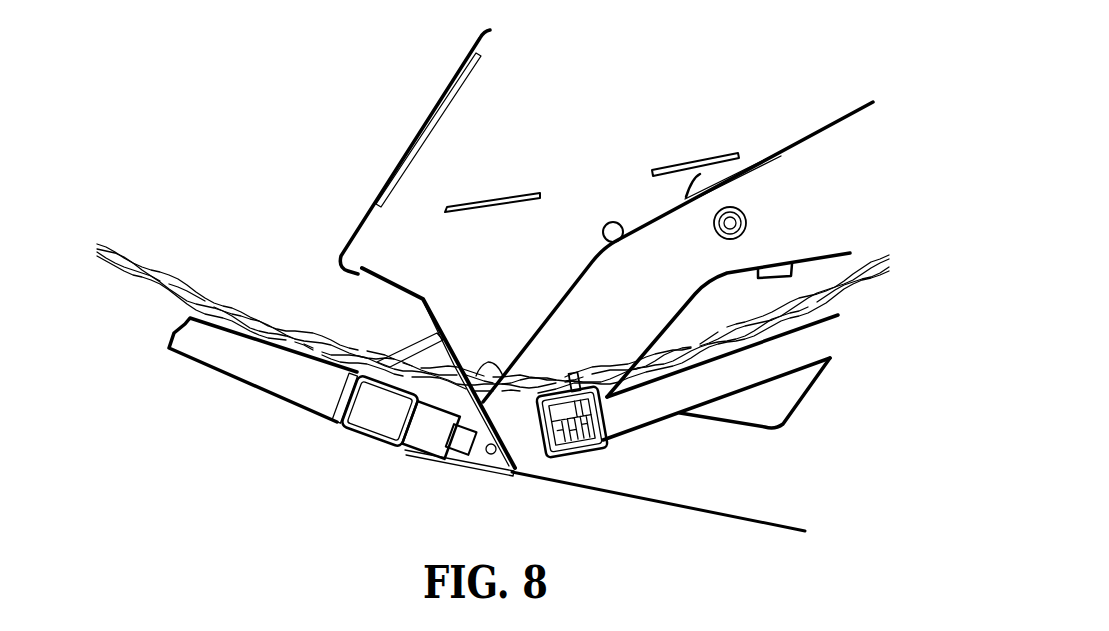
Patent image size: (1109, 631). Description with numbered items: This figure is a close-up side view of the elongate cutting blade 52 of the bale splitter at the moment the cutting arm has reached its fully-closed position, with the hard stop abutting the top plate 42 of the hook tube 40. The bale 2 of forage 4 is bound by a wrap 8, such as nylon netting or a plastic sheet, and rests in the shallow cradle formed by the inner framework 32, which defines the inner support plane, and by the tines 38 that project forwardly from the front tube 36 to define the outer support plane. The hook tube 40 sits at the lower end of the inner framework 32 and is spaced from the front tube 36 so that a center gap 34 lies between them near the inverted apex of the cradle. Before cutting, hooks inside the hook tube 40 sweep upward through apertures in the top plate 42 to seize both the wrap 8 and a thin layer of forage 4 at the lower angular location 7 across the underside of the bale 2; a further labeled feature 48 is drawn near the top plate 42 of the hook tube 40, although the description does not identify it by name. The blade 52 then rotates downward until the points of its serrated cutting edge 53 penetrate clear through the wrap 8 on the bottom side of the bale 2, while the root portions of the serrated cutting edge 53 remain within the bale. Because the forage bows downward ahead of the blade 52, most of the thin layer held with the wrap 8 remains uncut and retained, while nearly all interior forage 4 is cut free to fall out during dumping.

The bale 2 is at (864, 310).
The forage 4 is at (185, 232).
The lower angular location 7 is at (610, 401).
The wrap 8 is at (148, 280).
The inner framework 32 is at (742, 375).
The center gap 34 is at (503, 350).
The front tube 36 is at (365, 438).
The tines 38 is at (295, 385).
The hook tube 40 is at (578, 455).
The top plate 42 is at (553, 383).
The wire 48 is at (582, 373).
The elongate cutting blade 52 is at (478, 468).
The serrated cutting edge 53 is at (510, 475).